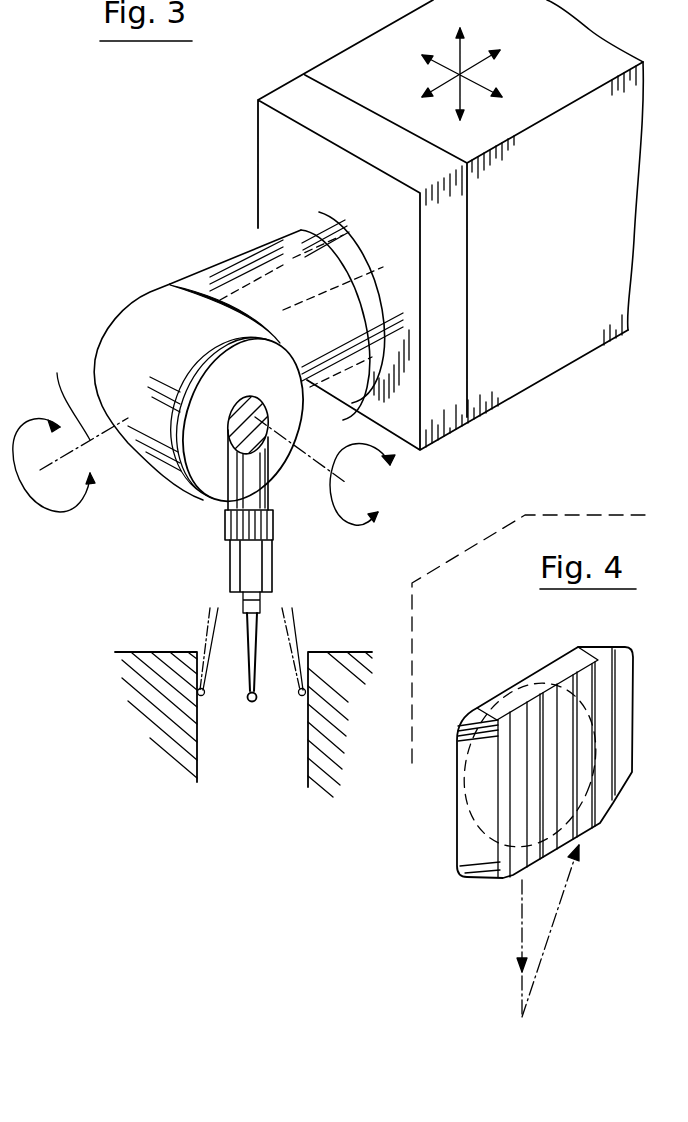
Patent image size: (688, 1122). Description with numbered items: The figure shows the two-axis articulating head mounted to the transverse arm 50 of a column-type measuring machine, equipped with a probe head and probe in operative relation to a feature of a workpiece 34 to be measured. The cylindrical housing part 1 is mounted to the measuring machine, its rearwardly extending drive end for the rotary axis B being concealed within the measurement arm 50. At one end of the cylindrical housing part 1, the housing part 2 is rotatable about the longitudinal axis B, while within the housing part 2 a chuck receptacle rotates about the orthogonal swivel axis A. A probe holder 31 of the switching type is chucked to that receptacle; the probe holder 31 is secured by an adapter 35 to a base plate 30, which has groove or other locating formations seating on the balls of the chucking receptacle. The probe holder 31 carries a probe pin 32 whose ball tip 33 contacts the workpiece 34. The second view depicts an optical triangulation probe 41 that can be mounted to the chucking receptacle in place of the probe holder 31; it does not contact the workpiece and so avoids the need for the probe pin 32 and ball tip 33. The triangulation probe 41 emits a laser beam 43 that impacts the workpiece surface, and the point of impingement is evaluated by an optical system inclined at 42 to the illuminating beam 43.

In FIG. 3, the cylindrical housing part 1 is at (211, 270).
In FIG. 3, the housing part 2 is at (112, 336).
In FIG. 3, the base plate 30 is at (296, 428).
In FIG. 3, the probe holder 31 is at (272, 560).
In FIG. 3, the probe pin 32 is at (247, 650).
In FIG. 3, the ball tip 33 is at (255, 702).
In FIG. 3, the workpiece 34 is at (138, 652).
In FIG. 3, the adapter 35 is at (237, 477).
In FIG. 4, the optical triangulation probe 41 is at (522, 690).
In FIG. 4, the inclined optical system axis 42 is at (555, 917).
In FIG. 4, the laser beam 43 is at (522, 903).
In FIG. 3, the transverse arm 50 is at (552, 358).